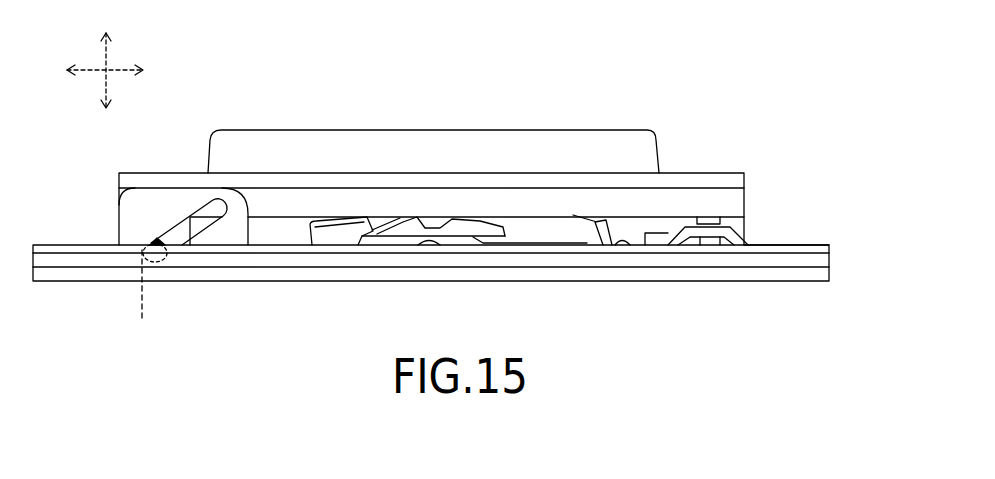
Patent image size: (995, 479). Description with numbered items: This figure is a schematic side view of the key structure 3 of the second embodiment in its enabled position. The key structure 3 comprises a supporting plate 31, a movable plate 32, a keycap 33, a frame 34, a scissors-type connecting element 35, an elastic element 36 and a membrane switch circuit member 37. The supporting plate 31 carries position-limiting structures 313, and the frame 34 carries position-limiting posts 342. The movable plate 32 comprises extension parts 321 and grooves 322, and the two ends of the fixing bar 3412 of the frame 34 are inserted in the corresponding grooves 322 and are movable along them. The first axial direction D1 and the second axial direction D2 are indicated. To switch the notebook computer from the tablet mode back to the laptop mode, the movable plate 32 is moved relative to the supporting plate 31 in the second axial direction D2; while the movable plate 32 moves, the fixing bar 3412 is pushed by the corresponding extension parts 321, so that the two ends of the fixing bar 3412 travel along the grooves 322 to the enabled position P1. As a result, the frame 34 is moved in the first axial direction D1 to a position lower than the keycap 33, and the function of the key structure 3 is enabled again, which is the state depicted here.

The key structure 3 is at (306, 66).
The supporting plate 31 is at (728, 257).
The movable plate 32 is at (673, 270).
The position-limiting structure 313 is at (742, 219).
The keycap 33 is at (580, 134).
The frame 34 is at (683, 178).
The position-limiting post 342 is at (709, 216).
The extension part 321 is at (135, 225).
The groove 322 is at (173, 230).
The fixing bar 3412 is at (160, 257).
The scissors-type connecting element 35 is at (545, 228).
The elastic element 36 is at (482, 241).
The membrane switch circuit member 37 is at (813, 246).
The enabled position P1 is at (140, 302).
The first axial direction D1 is at (104, 56).
The second axial direction D2 is at (125, 72).